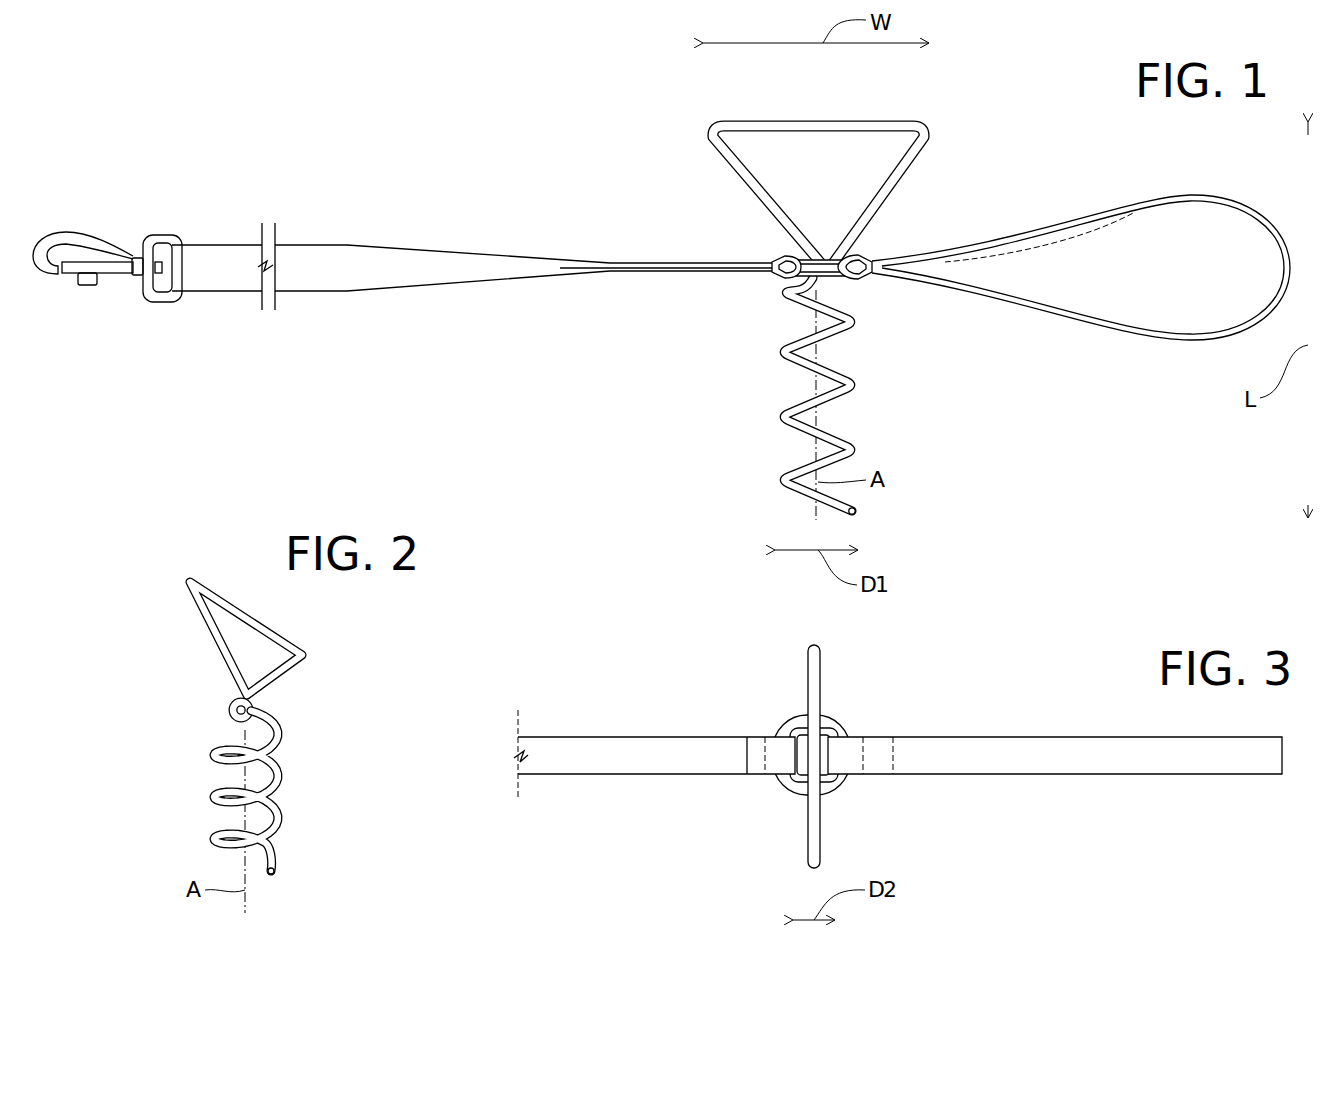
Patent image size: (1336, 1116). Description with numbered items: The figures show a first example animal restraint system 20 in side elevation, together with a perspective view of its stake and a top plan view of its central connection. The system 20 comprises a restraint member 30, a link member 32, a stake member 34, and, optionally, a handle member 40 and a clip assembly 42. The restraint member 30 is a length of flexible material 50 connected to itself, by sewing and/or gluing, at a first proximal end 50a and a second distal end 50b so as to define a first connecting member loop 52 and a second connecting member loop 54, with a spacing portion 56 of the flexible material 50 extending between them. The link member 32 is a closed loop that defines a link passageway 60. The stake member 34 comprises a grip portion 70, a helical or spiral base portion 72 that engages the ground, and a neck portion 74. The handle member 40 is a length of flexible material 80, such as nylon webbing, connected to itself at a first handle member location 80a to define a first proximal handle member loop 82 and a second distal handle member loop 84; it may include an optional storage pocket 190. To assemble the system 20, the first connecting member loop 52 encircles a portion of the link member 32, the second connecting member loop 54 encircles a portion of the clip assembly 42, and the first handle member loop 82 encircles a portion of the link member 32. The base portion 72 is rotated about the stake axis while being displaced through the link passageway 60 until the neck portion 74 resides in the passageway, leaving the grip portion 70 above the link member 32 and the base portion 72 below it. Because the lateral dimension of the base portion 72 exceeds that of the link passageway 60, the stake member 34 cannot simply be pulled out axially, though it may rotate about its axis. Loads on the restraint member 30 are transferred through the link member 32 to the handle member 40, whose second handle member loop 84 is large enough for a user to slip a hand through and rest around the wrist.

In FIG. 1, the animal restraint system 20 is at (330, 142).
In FIG. 1, the restraint member 30 is at (472, 257).
In FIG. 3, the restraint member 30 is at (654, 749).
In FIG. 1, the link member 32 is at (752, 276).
In FIG. 3, the link member 32 is at (786, 730).
In FIG. 1, the stake member 34 is at (816, 291).
In FIG. 2, the stake member 34 is at (300, 728).
In FIG. 3, the stake member 34 is at (774, 751).
In FIG. 1, the handle member 40 is at (1081, 275).
In FIG. 3, the handle member 40 is at (1055, 745).
In FIG. 1, the clip assembly 42 is at (85, 228).
In FIG. 1, the flexible material 50 is at (350, 272).
In FIG. 3, the flexible material 50 is at (592, 762).
In FIG. 1, the first end 50a is at (735, 289).
In FIG. 1, the second end 50b is at (193, 228).
In FIG. 1, the first connecting member loop 52 is at (775, 278).
In FIG. 3, the first connecting member loop 52 is at (778, 770).
In FIG. 1, the second connecting member loop 54 is at (180, 270).
In FIG. 1, the spacing portion 56 is at (395, 272).
In FIG. 1, the link passageway 60 is at (826, 256).
In FIG. 3, the link passageway 60 is at (823, 740).
In FIG. 1, the grip portion 70 is at (840, 120).
In FIG. 2, the grip portion 70 is at (265, 620).
In FIG. 3, the grip portion 70 is at (812, 695).
In FIG. 1, the base portion 72 is at (845, 400).
In FIG. 2, the base portion 72 is at (272, 784).
In FIG. 1, the neck portion 74 is at (820, 280).
In FIG. 2, the neck portion 74 is at (252, 708).
In FIG. 1, the flexible material 80 is at (1052, 310).
In FIG. 3, the flexible material 80 is at (1022, 760).
In FIG. 1, the first handle member location 80a is at (893, 262).
In FIG. 3, the first handle member location 80a is at (883, 732).
In FIG. 1, the first handle member loop 82 is at (860, 273).
In FIG. 3, the first handle member loop 82 is at (838, 768).
In FIG. 1, the second handle member loop 84 is at (1100, 322).
In FIG. 3, the second handle member loop 84 is at (1098, 765).
In FIG. 1, the storage pocket 190 is at (1080, 245).